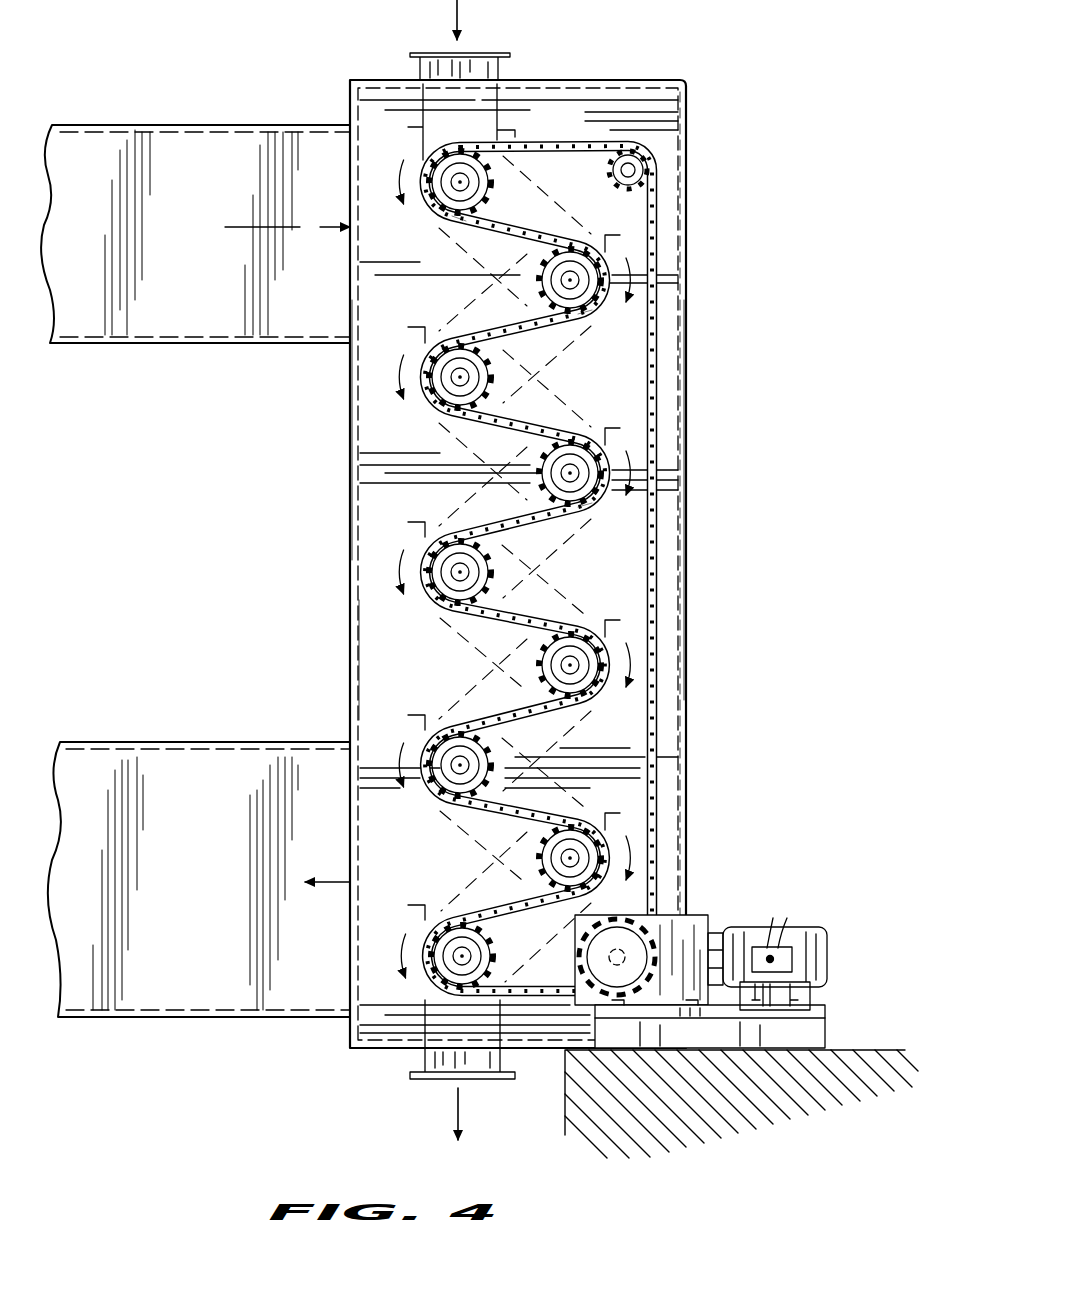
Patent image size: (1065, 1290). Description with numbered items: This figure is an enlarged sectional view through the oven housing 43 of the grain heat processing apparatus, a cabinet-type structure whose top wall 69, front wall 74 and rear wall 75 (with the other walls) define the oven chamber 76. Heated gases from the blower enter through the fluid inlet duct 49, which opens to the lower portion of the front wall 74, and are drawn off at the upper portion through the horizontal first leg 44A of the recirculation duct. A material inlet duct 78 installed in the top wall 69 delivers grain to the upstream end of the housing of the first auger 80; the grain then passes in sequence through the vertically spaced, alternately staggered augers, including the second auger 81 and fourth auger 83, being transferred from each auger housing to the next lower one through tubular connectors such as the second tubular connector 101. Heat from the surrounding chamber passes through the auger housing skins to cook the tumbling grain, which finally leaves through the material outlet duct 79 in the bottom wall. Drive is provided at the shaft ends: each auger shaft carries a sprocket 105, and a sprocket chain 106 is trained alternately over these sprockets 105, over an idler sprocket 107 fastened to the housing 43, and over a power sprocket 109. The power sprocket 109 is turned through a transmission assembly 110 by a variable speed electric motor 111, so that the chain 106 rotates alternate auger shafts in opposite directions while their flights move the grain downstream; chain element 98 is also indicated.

The oven housing 43 is at (692, 228).
The first leg of recirculation duct 44A is at (255, 125).
The fluid inlet duct 49 is at (196, 742).
The top wall 69 is at (637, 80).
The front wall 74 is at (355, 482).
The rear wall 75 is at (690, 538).
The oven chamber 76 is at (388, 668).
The material inlet duct 78 is at (500, 68).
The material outlet duct 79 is at (410, 1065).
The first auger 80 is at (450, 218).
The second auger 81 is at (600, 306).
The fourth auger 83 is at (590, 512).
The conveyor chain 98 is at (512, 150).
The second tubular connector 101 is at (547, 292).
The sprocket 105 is at (505, 182).
The sprocket chain 106 is at (537, 337).
The idler sprocket 107 is at (640, 165).
The power sprocket 109 is at (632, 915).
The transmission assembly 110 is at (694, 920).
The variable speed electric motor 111 is at (790, 950).